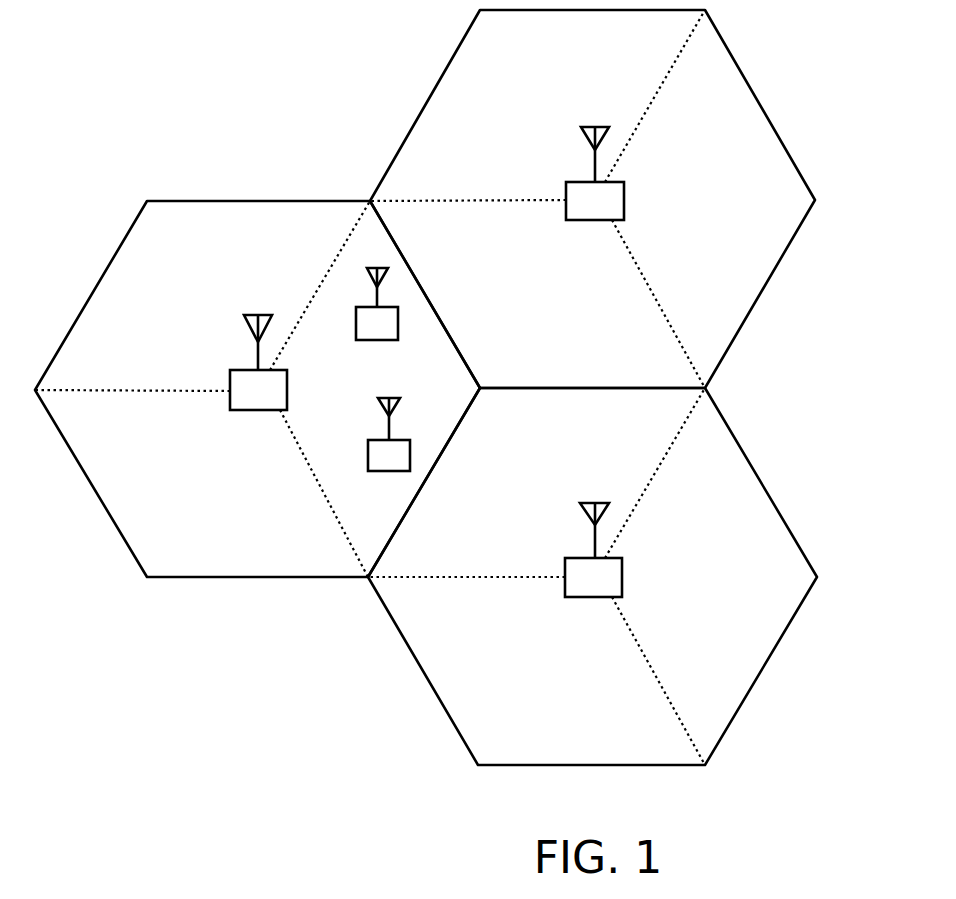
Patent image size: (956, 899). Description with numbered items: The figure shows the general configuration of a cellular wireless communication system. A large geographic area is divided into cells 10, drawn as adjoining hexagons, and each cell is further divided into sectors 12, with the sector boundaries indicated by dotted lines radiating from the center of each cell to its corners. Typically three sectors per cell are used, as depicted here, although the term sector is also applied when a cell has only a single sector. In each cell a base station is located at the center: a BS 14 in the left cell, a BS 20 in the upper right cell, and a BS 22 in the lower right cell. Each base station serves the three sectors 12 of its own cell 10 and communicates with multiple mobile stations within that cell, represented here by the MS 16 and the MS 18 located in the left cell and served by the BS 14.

The cell 10 is at (258, 200).
The sector 12 is at (510, 105).
The base station 14 is at (245, 411).
The mobile station 16 is at (398, 307).
The mobile station 18 is at (410, 456).
The base station 20 is at (595, 220).
The base station 22 is at (580, 598).